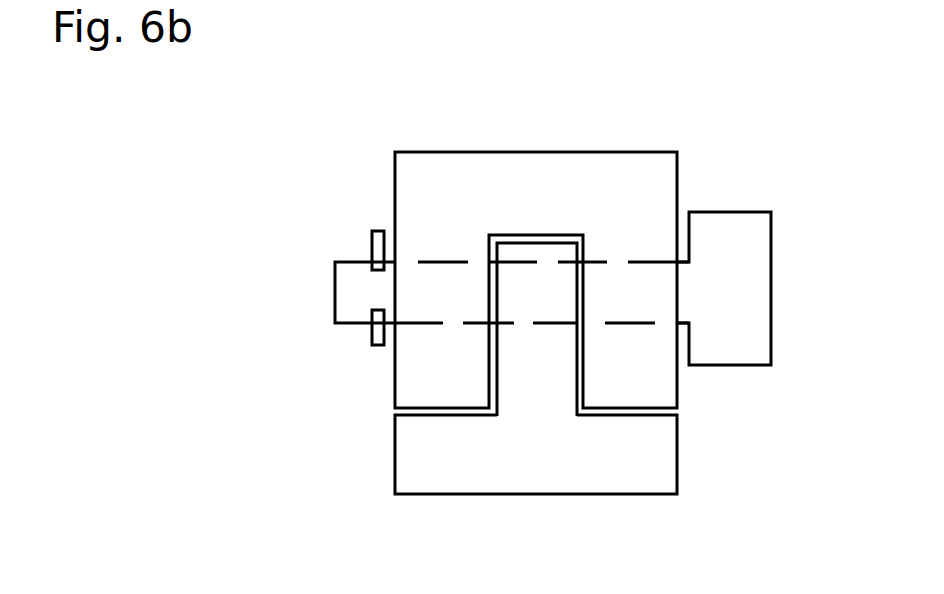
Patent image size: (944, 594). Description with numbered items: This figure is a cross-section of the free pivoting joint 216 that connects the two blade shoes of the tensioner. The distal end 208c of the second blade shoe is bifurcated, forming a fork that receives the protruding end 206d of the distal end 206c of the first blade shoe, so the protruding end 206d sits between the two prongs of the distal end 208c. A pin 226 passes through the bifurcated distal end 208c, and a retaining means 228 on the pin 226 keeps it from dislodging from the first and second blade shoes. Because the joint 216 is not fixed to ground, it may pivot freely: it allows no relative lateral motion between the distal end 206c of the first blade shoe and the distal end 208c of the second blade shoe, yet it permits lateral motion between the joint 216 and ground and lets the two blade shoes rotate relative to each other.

The joint 216 is at (506, 323).
The distal end of the second blade shoe 208c is at (638, 188).
The distal end of the first blade shoe 206c is at (586, 471).
The protruding end 206d is at (517, 357).
The pin 226 is at (747, 283).
The retaining means 228 is at (371, 245).